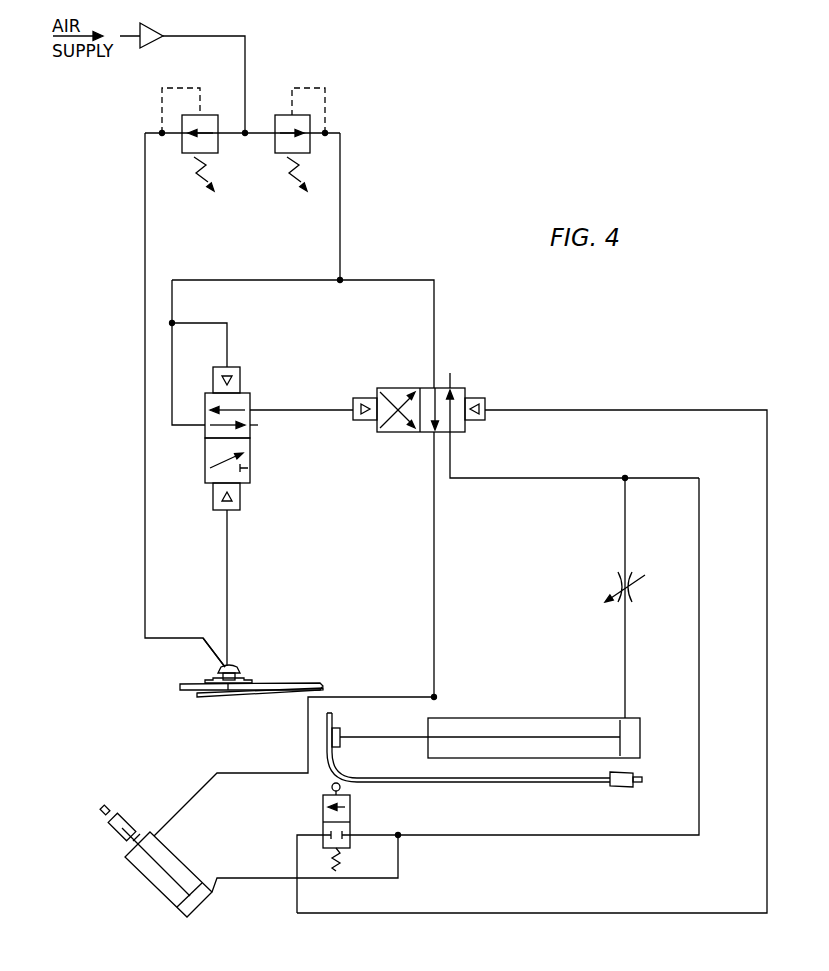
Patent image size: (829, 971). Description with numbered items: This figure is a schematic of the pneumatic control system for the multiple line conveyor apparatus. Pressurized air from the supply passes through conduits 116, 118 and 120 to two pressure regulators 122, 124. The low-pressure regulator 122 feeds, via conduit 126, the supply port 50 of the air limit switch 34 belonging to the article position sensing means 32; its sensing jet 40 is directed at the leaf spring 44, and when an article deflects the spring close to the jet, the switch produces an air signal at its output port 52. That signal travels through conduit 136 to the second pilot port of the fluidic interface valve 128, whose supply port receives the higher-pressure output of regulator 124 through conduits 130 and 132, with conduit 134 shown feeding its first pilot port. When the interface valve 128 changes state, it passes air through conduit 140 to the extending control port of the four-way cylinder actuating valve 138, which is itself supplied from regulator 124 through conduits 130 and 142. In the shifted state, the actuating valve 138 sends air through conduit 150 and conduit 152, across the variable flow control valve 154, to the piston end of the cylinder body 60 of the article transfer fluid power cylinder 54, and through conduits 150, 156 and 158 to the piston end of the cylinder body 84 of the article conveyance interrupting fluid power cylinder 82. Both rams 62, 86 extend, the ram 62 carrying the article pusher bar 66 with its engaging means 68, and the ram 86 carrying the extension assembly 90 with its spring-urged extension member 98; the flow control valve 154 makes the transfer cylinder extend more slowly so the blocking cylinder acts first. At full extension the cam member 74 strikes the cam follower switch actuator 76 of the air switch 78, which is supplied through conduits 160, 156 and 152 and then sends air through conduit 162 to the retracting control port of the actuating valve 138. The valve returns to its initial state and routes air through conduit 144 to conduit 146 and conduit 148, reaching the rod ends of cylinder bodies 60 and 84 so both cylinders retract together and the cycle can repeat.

The article position sensing means 32 is at (243, 667).
The air limit switch 34 is at (212, 680).
The sensing jet 40 is at (230, 690).
The leaf spring 44 is at (205, 698).
The supply port 50 is at (222, 665).
The output port 52 is at (233, 667).
The article transfer fluid power cylinder 54 is at (502, 717).
The cylinder body 60 is at (550, 717).
The ram 62 is at (363, 740).
The article pusher bar 66 is at (448, 783).
The means for engaging an article 68 is at (327, 747).
The cam member 74 is at (613, 787).
The cam follower switch actuator 76 is at (332, 788).
The air switch 78 is at (352, 808).
The article conveyance interrupting fluid power cylinder 82 is at (170, 847).
The cylinder body 84 is at (188, 865).
The ram 86 is at (133, 841).
The extension assembly 90 is at (125, 812).
The extension member 98 is at (113, 811).
The conduit 116 is at (228, 35).
The conduit 118 is at (232, 132).
The conduit 120 is at (258, 132).
The pressure regulator 122 is at (185, 156).
The pressure regulator 124 is at (276, 156).
The conduit 126 is at (148, 570).
The fluidic interface valve 128 is at (250, 394).
The conduit 130 is at (340, 200).
The conduit 132 is at (247, 280).
The conduit 134 is at (195, 323).
The conduit 136 is at (228, 578).
The four-way cylinder actuating valve 138 is at (392, 387).
The conduit 140 is at (297, 408).
The conduit 142 is at (387, 280).
The conduit 144 is at (436, 570).
The conduit 146 is at (438, 705).
The conduit 148 is at (375, 697).
The conduit 150 is at (537, 480).
The conduit 152 is at (627, 528).
The variable flow control valve 154 is at (615, 585).
The conduit 156 is at (700, 660).
The conduit 158 is at (267, 878).
The conduit 160 is at (372, 837).
The conduit 162 is at (767, 598).